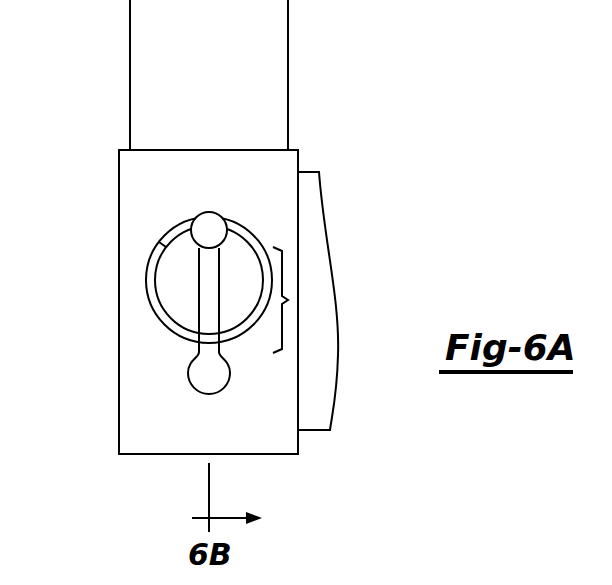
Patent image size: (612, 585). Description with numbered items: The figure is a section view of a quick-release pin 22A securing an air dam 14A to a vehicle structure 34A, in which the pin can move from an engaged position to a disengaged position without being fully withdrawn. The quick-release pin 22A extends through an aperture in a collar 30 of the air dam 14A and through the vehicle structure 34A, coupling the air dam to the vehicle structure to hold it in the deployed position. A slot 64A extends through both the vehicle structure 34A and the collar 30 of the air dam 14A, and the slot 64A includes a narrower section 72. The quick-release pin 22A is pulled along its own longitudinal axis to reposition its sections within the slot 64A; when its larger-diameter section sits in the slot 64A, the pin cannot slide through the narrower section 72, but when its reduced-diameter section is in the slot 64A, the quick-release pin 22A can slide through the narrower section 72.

The vehicle structure 34A is at (162, 44).
The air dam 14A is at (142, 418).
The collar 30 is at (152, 358).
The slot 64A is at (196, 284).
The quick-release pin 22A is at (201, 214).
The narrower section 72 is at (288, 300).